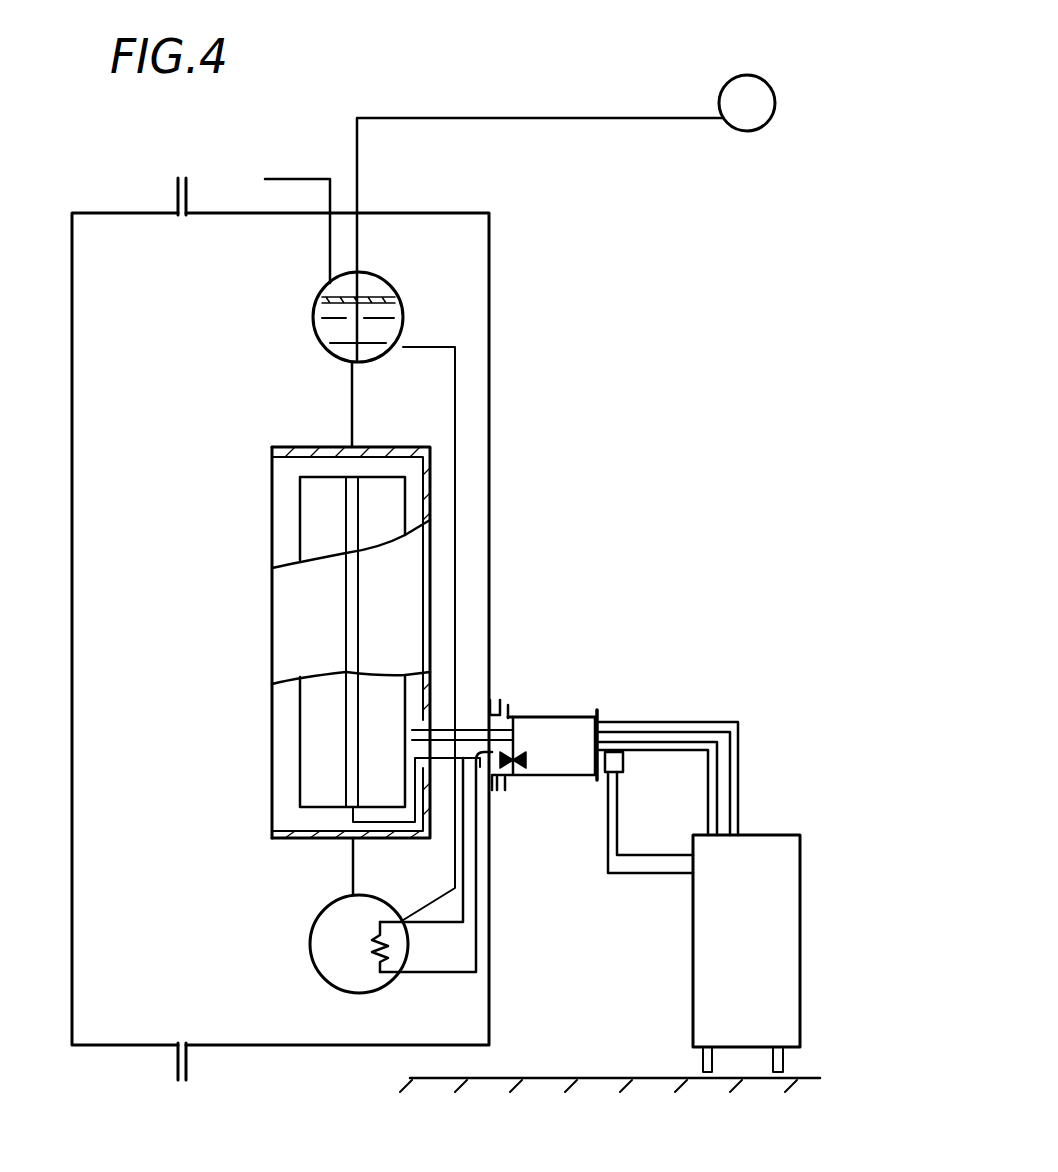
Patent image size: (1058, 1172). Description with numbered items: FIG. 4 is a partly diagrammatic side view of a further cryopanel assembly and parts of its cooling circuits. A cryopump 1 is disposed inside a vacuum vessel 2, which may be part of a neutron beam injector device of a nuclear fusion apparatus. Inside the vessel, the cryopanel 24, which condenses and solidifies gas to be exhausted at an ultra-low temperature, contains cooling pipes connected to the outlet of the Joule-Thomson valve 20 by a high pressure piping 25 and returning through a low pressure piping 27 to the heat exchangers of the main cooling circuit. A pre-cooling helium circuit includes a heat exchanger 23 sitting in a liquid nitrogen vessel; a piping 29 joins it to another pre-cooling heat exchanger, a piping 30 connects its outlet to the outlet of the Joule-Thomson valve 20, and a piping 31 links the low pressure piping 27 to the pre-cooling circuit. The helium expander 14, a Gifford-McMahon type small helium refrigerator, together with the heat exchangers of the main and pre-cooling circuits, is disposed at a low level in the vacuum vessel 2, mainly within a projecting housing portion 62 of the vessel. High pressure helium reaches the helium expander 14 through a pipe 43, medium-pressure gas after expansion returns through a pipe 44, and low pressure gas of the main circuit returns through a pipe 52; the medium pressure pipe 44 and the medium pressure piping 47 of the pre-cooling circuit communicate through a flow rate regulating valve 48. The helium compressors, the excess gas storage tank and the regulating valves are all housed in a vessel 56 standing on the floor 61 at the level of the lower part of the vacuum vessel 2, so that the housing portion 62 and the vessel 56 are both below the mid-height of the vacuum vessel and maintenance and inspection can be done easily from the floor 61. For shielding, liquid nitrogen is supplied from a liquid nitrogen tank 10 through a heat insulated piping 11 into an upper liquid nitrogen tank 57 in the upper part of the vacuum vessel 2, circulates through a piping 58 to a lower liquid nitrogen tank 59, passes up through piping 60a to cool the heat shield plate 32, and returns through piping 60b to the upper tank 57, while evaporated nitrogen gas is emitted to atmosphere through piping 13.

The cryopump 1 is at (280, 605).
The vacuum vessel 2 is at (280, 1047).
The liquid nitrogen tank 10 is at (748, 120).
The heat insulated piping 11 is at (497, 120).
The piping 13 is at (275, 179).
The helium expander 14 is at (623, 765).
The Joule-Thomson valve 20 is at (520, 762).
The heat exchanger 23 is at (372, 950).
The cryopanel 24 is at (300, 783).
The high pressure piping 25 is at (490, 790).
The low pressure piping 27 is at (480, 728).
The piping 29 is at (478, 962).
The piping 30 is at (465, 907).
The piping 31 is at (510, 722).
The heat shield plate 32 is at (430, 490).
The pipe 43 is at (693, 800).
The pipe 44 is at (640, 878).
The medium pressure piping 47 is at (737, 757).
The flow rate regulating valve 48 is at (708, 808).
The pipe 52 is at (738, 728).
The vessel 56 is at (695, 980).
The upper liquid nitrogen tank 57 is at (403, 323).
The piping 58 is at (455, 405).
The lower liquid nitrogen tank 59 is at (325, 947).
The piping 60a is at (350, 873).
The piping 60b is at (350, 398).
The floor 61 is at (543, 1077).
The projecting housing portion 62 is at (578, 718).